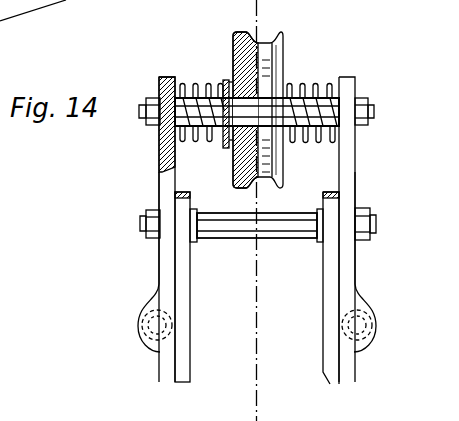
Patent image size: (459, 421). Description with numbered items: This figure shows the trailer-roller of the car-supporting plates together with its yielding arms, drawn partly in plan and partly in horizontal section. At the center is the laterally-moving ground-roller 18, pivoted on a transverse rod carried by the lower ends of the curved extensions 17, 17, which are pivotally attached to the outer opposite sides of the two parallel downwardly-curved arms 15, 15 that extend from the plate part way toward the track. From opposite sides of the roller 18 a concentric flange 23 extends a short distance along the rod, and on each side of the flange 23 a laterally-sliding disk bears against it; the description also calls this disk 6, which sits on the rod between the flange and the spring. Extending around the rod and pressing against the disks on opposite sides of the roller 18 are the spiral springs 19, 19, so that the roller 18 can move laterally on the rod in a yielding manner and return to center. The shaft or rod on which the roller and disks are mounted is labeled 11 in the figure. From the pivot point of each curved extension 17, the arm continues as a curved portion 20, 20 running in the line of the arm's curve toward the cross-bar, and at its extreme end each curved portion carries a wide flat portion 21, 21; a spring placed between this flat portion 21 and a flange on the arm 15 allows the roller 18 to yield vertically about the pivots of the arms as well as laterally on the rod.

The laterally-moving ground-roller 18 is at (258, 38).
The collar 6 is at (226, 80).
The concentric flange 23 is at (229, 155).
The shaft 11 is at (161, 172).
The spiral spring 19 is at (304, 141).
The curved extension 17 is at (364, 160).
The curved portion 20 is at (368, 269).
The wide flat portion 21 is at (388, 325).
The downwardly-curved arm 15 is at (190, 337).